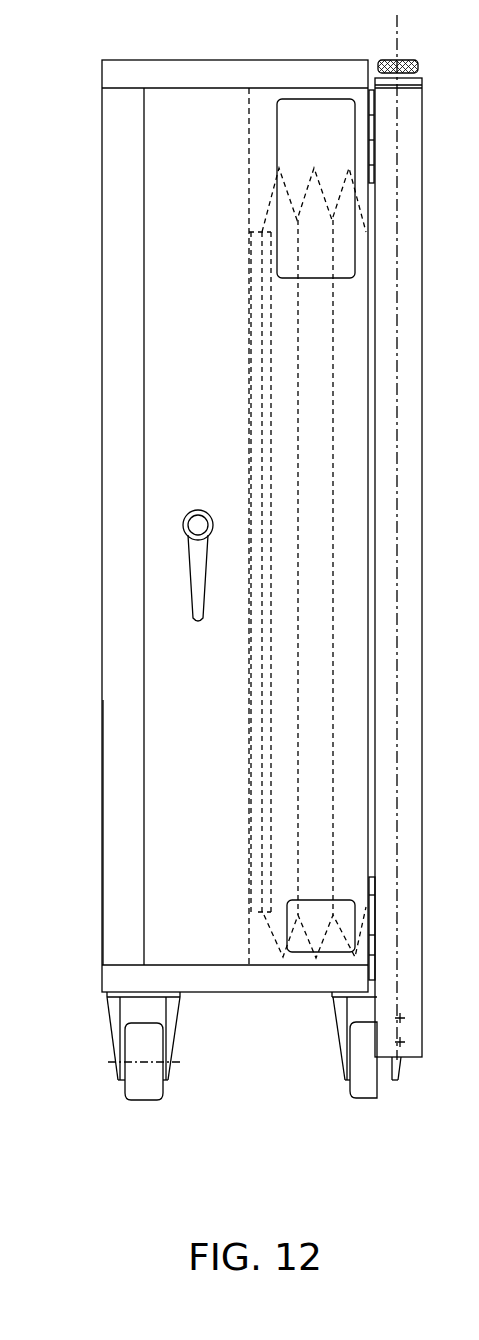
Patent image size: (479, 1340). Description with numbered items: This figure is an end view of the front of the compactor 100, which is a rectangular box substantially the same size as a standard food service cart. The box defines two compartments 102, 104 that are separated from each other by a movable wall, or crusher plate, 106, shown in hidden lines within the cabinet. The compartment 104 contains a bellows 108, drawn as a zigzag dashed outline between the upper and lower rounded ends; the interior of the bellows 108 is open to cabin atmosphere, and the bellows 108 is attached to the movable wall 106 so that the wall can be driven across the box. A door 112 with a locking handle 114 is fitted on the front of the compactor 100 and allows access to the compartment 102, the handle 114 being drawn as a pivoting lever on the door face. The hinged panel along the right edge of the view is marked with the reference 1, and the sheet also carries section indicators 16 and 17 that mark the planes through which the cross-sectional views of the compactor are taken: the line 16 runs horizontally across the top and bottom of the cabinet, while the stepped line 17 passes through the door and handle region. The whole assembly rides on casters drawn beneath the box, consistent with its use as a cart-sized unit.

The compactor 100 is at (78, 958).
The compartment 102 is at (173, 240).
The compartment 104 is at (315, 350).
The movable wall (crusher plate) 106 is at (250, 285).
The bellows 108 is at (334, 808).
The door 112 is at (195, 812).
The locking handle 114 is at (190, 582).
The door 1 is at (424, 537).
The section line 16- 16 is at (397, 15).
The section line 17- 17 is at (82, 377).